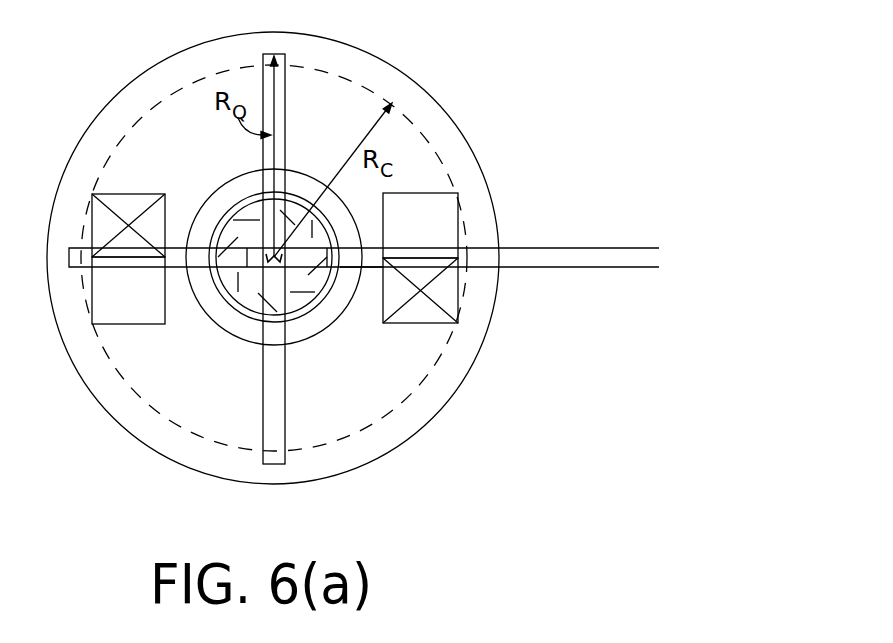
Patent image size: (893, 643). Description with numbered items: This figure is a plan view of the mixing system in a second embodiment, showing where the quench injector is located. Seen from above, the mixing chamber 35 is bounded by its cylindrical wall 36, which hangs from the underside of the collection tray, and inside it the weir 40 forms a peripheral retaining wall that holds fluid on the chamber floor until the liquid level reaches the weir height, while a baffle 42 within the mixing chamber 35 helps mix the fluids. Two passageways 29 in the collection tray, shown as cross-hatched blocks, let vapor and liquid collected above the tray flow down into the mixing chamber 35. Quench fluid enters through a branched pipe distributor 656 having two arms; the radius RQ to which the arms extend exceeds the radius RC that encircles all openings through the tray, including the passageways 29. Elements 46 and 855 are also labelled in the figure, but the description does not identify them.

The passageway 29 is at (460, 188).
The mixing chamber 35 is at (218, 222).
The cylindrical wall 36 is at (152, 456).
The weir 40 is at (235, 324).
The baffle 42 is at (300, 350).
The horizontal rod 46 is at (612, 246).
The branched pipe distributor 656 is at (263, 424).
The rod segment 855 is at (372, 268).